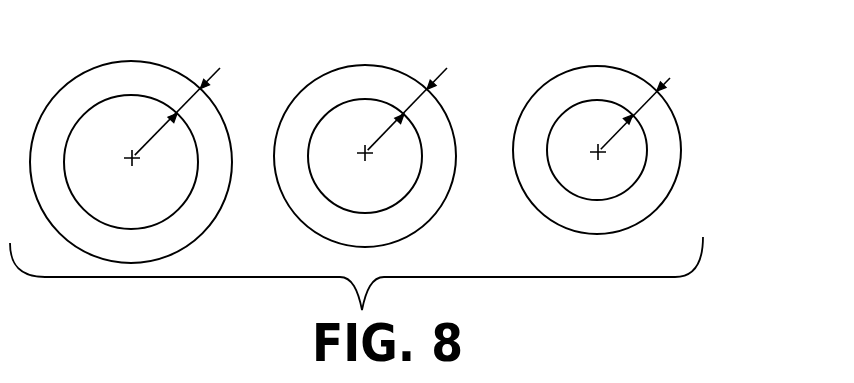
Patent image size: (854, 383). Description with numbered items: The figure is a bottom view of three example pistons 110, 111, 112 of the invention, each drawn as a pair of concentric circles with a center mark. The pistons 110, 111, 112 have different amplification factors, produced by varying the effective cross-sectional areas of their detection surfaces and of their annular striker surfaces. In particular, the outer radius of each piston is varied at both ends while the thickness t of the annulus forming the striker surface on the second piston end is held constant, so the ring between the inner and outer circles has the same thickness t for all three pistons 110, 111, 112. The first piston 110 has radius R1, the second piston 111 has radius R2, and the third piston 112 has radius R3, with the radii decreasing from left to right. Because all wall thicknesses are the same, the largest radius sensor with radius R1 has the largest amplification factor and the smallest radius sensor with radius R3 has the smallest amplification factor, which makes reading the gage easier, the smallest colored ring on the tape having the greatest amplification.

The piston 110 is at (77, 77).
The piston 111 is at (342, 65).
The piston 112 is at (567, 72).
The thickness of the annulus t is at (182, 97).
The radius R1 is at (147, 143).
The radius R2 is at (382, 137).
The radius R3 is at (612, 140).